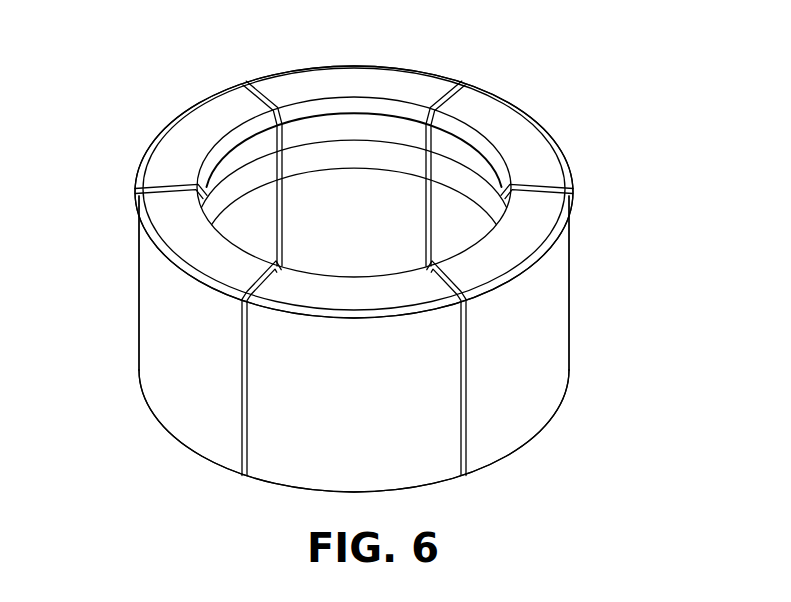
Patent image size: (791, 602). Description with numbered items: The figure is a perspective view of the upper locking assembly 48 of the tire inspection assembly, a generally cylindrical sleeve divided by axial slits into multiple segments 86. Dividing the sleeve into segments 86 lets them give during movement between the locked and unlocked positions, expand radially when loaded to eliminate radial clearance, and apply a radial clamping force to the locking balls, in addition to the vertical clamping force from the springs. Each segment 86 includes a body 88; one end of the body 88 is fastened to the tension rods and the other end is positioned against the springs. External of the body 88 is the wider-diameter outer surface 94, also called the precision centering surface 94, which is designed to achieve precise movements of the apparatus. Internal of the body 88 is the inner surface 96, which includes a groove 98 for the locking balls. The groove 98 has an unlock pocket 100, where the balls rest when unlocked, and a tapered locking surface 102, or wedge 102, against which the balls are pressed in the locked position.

The upper locking assembly 48 is at (140, 110).
The segments 86 is at (582, 270).
The body 88 is at (530, 212).
The outer surface 94 is at (515, 305).
The inner surface 96 is at (355, 235).
The groove 98 is at (374, 124).
The unlock pocket 100 is at (402, 157).
The tapered locking surface 102 is at (313, 127).